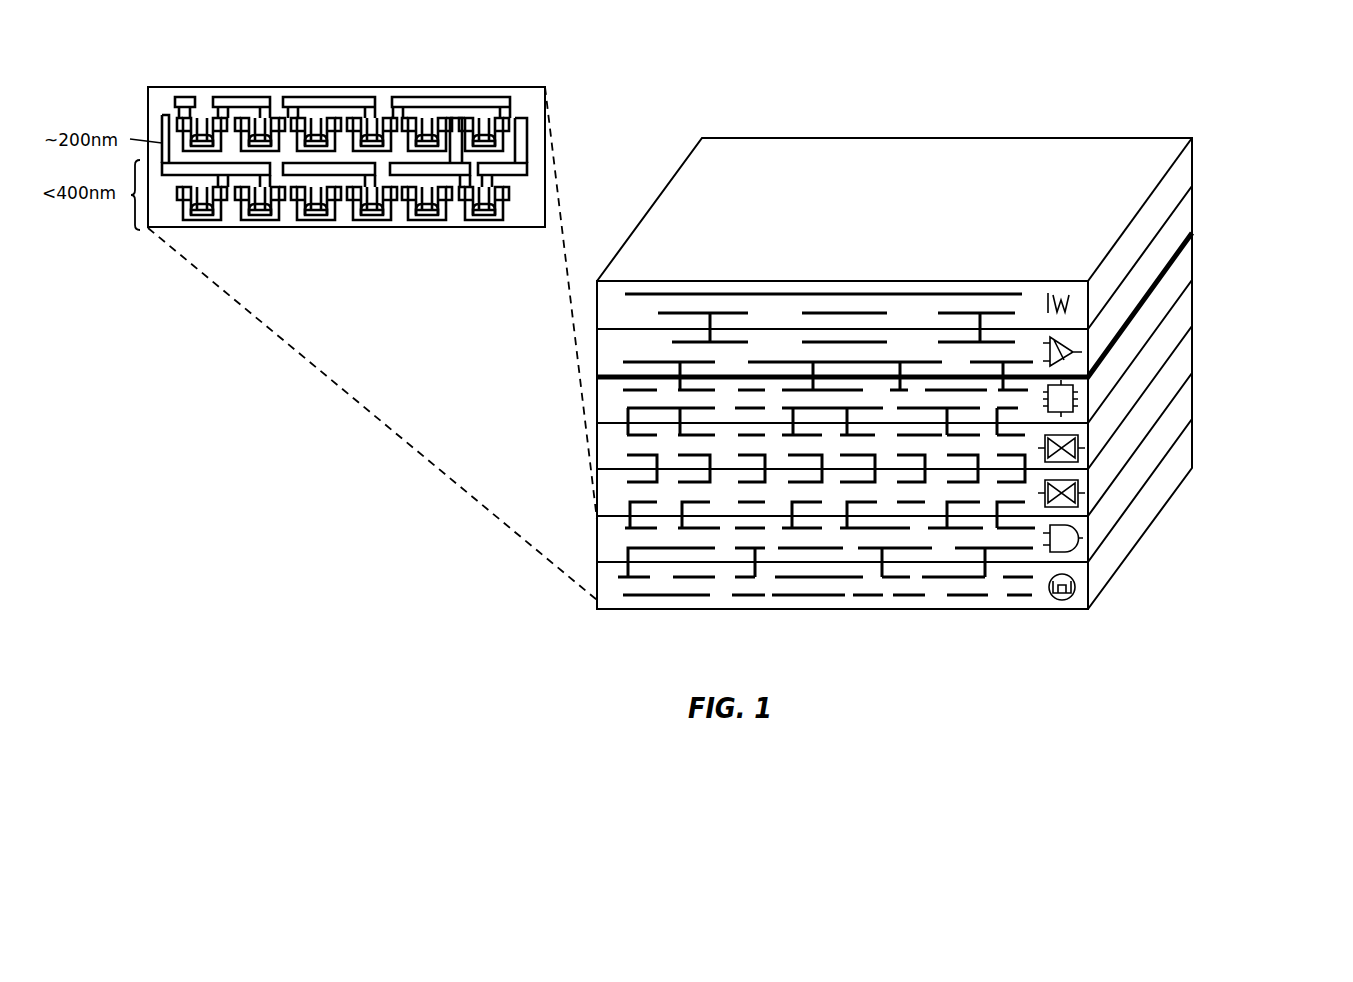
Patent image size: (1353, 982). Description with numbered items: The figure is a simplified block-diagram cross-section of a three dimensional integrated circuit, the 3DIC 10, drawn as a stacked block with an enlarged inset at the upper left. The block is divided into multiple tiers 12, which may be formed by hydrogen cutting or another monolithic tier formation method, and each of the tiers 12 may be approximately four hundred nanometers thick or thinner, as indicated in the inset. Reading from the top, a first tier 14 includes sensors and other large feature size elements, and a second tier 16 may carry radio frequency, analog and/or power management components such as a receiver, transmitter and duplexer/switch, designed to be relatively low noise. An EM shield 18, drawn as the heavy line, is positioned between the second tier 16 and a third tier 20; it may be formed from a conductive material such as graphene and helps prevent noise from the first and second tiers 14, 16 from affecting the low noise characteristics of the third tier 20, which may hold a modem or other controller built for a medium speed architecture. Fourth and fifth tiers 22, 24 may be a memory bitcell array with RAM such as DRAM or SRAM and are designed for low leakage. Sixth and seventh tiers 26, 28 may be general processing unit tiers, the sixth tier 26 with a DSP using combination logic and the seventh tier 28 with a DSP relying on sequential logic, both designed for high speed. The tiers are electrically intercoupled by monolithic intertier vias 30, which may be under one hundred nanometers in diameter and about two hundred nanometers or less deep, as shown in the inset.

The 3DIC 10 is at (1224, 114).
The tiers 12 is at (1284, 122).
The first tier 14 is at (1193, 160).
The second tier 16 is at (1193, 208).
The EM shield 18 is at (597, 376).
The third tier 20 is at (1193, 253).
The fourth tier 22 is at (1193, 300).
The fifth tier 24 is at (1193, 346).
The sixth tier 26 is at (1193, 378).
The seventh tier 28 is at (1193, 427).
The monolithic intertier vias 30 is at (162, 143).